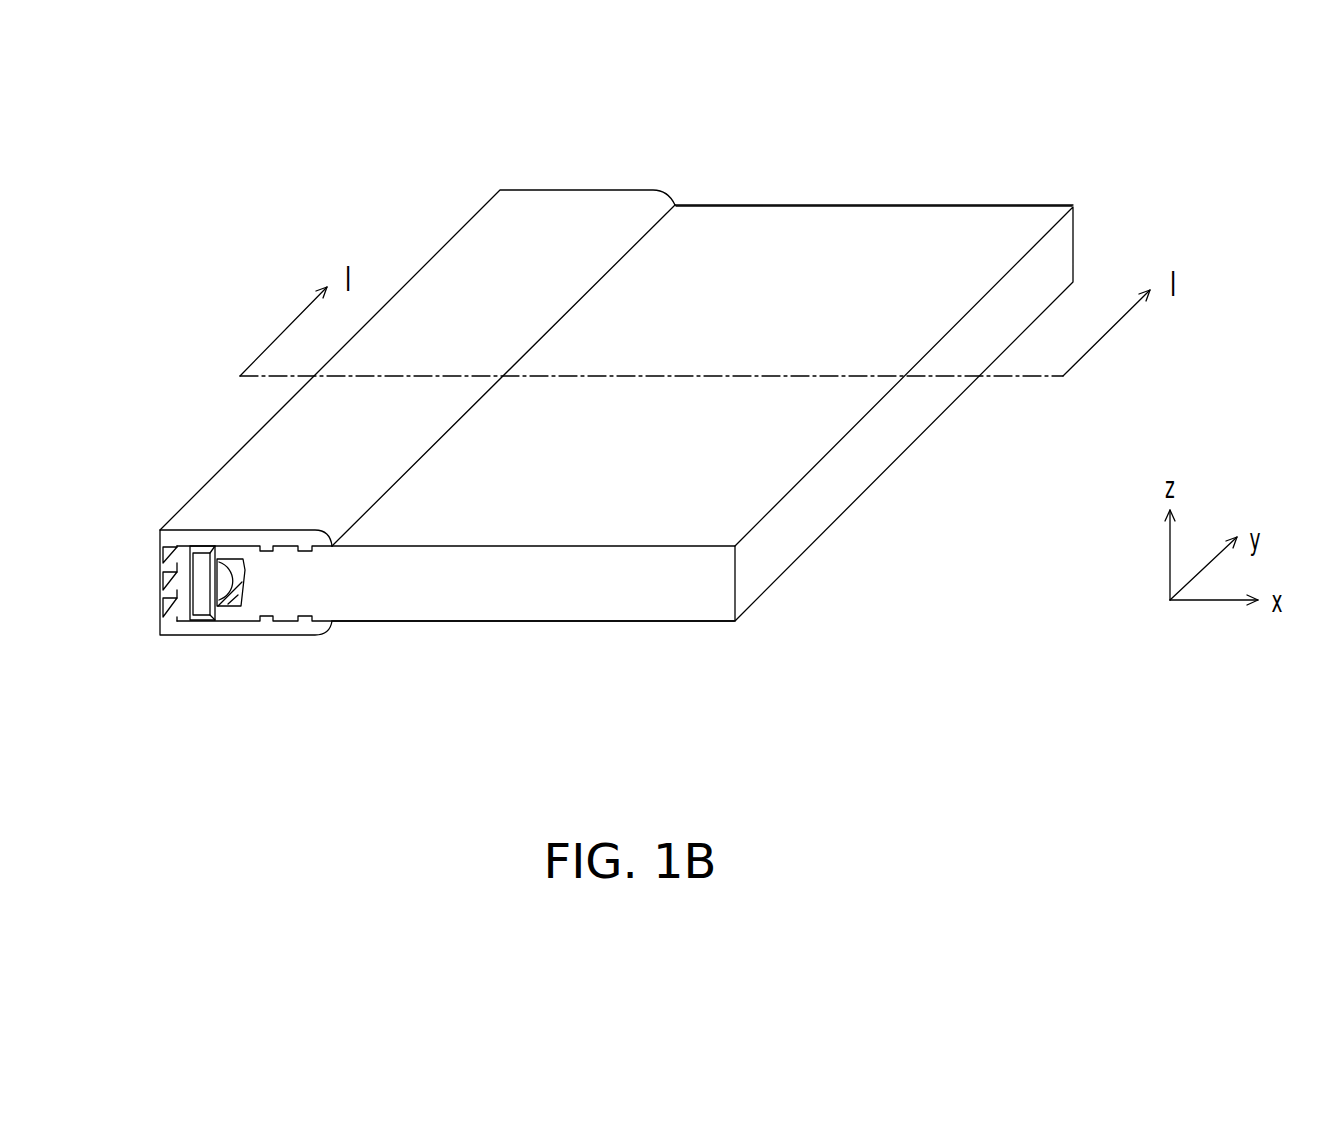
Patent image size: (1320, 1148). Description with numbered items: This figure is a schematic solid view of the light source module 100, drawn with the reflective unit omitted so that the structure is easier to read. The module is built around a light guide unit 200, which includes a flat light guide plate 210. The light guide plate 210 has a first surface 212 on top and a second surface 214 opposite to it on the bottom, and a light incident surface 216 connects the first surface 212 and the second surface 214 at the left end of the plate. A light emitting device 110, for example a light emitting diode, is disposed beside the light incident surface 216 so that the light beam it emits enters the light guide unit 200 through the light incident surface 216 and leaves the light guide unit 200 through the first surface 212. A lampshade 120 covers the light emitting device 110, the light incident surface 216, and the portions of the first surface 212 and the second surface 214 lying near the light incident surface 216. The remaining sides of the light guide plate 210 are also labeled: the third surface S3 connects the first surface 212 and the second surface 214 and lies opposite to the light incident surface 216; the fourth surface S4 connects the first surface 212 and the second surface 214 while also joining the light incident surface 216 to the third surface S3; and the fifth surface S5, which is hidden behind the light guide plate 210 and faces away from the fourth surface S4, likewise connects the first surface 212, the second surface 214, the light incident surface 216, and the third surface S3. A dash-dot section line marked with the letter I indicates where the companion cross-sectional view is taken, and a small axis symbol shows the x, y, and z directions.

The light source module 100 is at (1200, 735).
The light emitting device 110 is at (235, 563).
The lampshade 120 is at (458, 285).
The light guide unit 200 is at (761, 423).
The light guide plate 210 is at (702, 423).
The first surface 212 is at (830, 250).
The second surface 214 is at (545, 624).
The light incident surface 216 is at (232, 600).
The third surface S3 is at (873, 438).
The fourth surface S4 is at (640, 582).
The fifth surface S5 is at (968, 204).